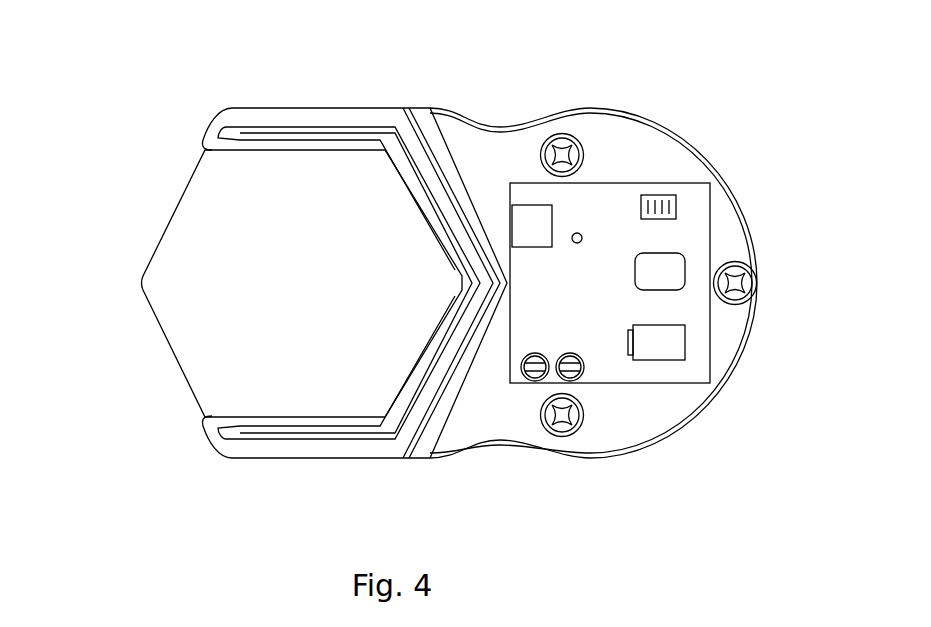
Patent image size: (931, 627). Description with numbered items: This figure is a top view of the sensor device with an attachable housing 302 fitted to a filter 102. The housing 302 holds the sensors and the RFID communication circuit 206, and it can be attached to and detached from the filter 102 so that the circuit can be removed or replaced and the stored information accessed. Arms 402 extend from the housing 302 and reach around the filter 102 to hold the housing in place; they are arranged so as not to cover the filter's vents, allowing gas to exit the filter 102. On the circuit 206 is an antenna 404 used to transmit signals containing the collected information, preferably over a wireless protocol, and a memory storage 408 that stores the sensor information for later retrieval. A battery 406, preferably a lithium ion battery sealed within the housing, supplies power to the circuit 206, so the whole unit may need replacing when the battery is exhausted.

The filter 102 is at (188, 226).
The RFID communication circuit 206 is at (700, 214).
The attachable housing 302 is at (632, 142).
The arms 402 is at (322, 108).
The antenna 404 is at (666, 194).
The battery 406 is at (687, 345).
The memory storage 408 is at (685, 268).